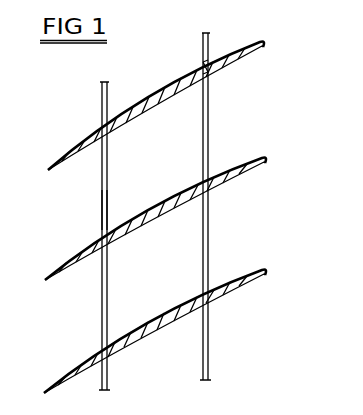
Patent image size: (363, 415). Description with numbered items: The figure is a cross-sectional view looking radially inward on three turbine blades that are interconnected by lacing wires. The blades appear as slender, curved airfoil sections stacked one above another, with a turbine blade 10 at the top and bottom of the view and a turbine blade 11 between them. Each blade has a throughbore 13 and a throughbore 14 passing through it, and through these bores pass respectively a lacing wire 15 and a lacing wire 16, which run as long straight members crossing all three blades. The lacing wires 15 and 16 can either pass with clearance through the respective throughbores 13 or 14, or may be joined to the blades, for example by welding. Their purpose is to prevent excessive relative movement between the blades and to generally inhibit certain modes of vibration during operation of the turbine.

The turbine blade 10 is at (263, 41).
The turbine blade 11 is at (265, 156).
The throughbore 13 is at (202, 62).
The throughbore 14 is at (101, 120).
The lacing wire 15 is at (209, 125).
The lacing wire 16 is at (101, 207).